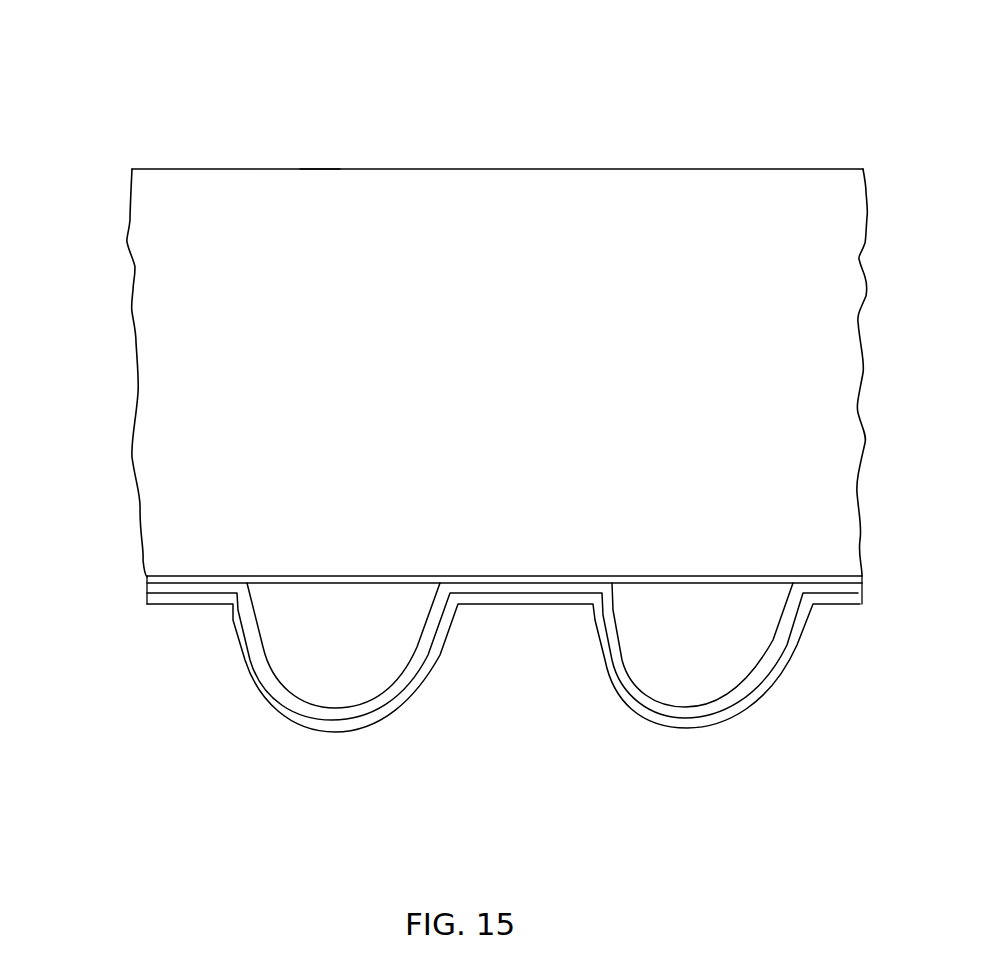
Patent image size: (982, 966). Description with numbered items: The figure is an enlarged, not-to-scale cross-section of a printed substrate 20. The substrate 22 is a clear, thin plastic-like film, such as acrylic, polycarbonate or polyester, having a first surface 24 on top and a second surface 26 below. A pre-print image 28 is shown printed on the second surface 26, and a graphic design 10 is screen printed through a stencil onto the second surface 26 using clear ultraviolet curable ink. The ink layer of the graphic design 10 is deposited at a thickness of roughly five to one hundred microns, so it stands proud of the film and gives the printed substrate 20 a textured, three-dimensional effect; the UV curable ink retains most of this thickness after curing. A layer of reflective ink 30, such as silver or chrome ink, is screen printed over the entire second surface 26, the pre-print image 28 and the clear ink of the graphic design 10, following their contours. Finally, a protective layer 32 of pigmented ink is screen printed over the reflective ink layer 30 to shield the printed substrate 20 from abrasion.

The printed substrate 20 is at (728, 92).
The substrate 22 is at (248, 218).
The first surface 24 is at (330, 169).
The second surface 26 is at (163, 573).
The pre-print image 28 is at (198, 578).
The layer of reflective ink 30 is at (278, 682).
The protective layer 32 is at (798, 642).
The graphic design 10 is at (390, 665).